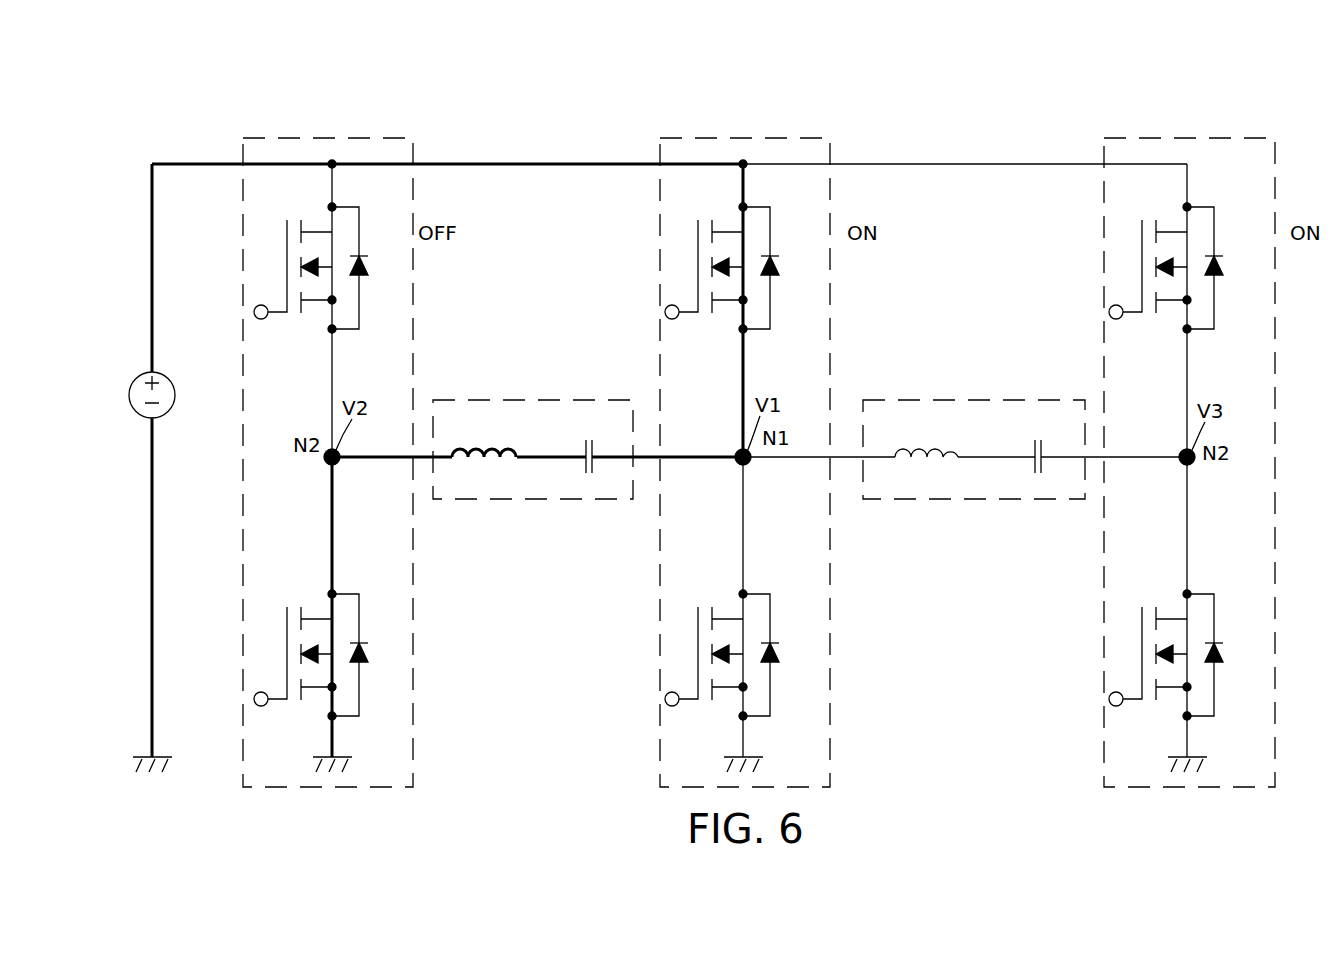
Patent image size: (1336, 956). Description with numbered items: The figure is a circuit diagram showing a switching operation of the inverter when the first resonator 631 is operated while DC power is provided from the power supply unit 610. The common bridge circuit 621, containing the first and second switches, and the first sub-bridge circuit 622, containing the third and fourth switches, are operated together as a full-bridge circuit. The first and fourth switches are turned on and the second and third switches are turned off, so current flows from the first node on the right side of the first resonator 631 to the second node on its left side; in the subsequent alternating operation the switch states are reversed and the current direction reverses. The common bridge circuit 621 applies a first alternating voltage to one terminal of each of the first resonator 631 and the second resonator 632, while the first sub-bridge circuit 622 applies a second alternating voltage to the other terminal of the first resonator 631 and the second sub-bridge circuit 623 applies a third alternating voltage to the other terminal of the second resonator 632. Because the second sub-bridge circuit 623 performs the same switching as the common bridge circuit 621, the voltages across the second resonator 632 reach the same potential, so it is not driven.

The power supply unit 610 is at (137, 379).
The common bridge circuit 621 is at (805, 138).
The first sub-bridge circuit 622 is at (387, 138).
The second sub-bridge circuit 623 is at (1249, 138).
The first resonator 631 is at (517, 400).
The second resonator 632 is at (917, 400).